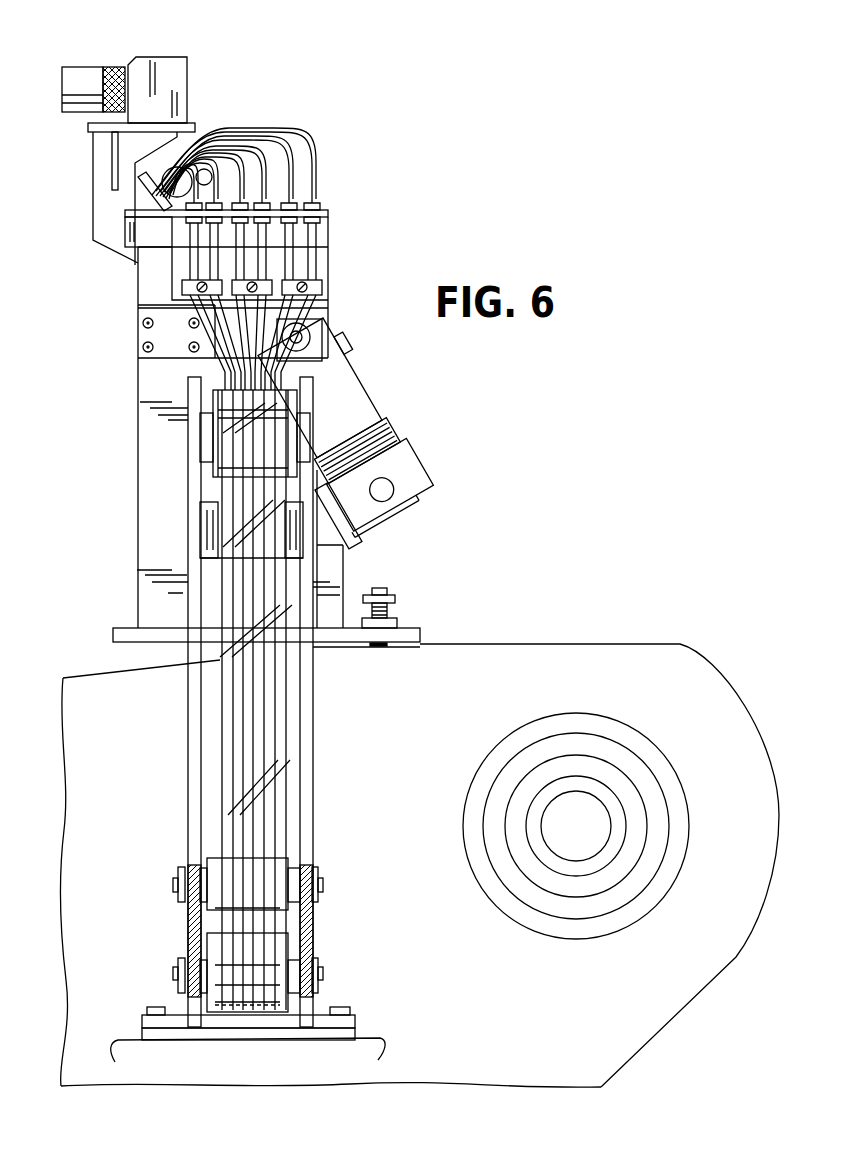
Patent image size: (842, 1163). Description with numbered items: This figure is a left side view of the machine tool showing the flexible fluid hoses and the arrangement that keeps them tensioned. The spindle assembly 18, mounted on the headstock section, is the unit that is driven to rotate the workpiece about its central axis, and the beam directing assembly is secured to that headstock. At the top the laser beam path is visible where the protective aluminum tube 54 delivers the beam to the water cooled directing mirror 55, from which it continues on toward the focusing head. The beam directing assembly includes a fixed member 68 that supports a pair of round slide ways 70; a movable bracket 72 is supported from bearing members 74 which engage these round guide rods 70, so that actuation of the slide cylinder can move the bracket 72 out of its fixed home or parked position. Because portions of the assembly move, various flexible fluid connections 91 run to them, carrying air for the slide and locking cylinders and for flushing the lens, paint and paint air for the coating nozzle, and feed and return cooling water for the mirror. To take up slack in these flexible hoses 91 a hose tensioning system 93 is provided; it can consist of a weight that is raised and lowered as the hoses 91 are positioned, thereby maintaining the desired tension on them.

The spindle assembly 18 is at (628, 764).
The tube 54 is at (87, 78).
The mirror 55 is at (173, 80).
The flexible fluid connections 91 is at (223, 138).
The movable bracket 72 is at (350, 405).
The round slide ways 70 is at (390, 480).
The bearing members 74 is at (355, 508).
The fixed member 68 is at (413, 635).
The hose tensioning system 93 is at (285, 857).